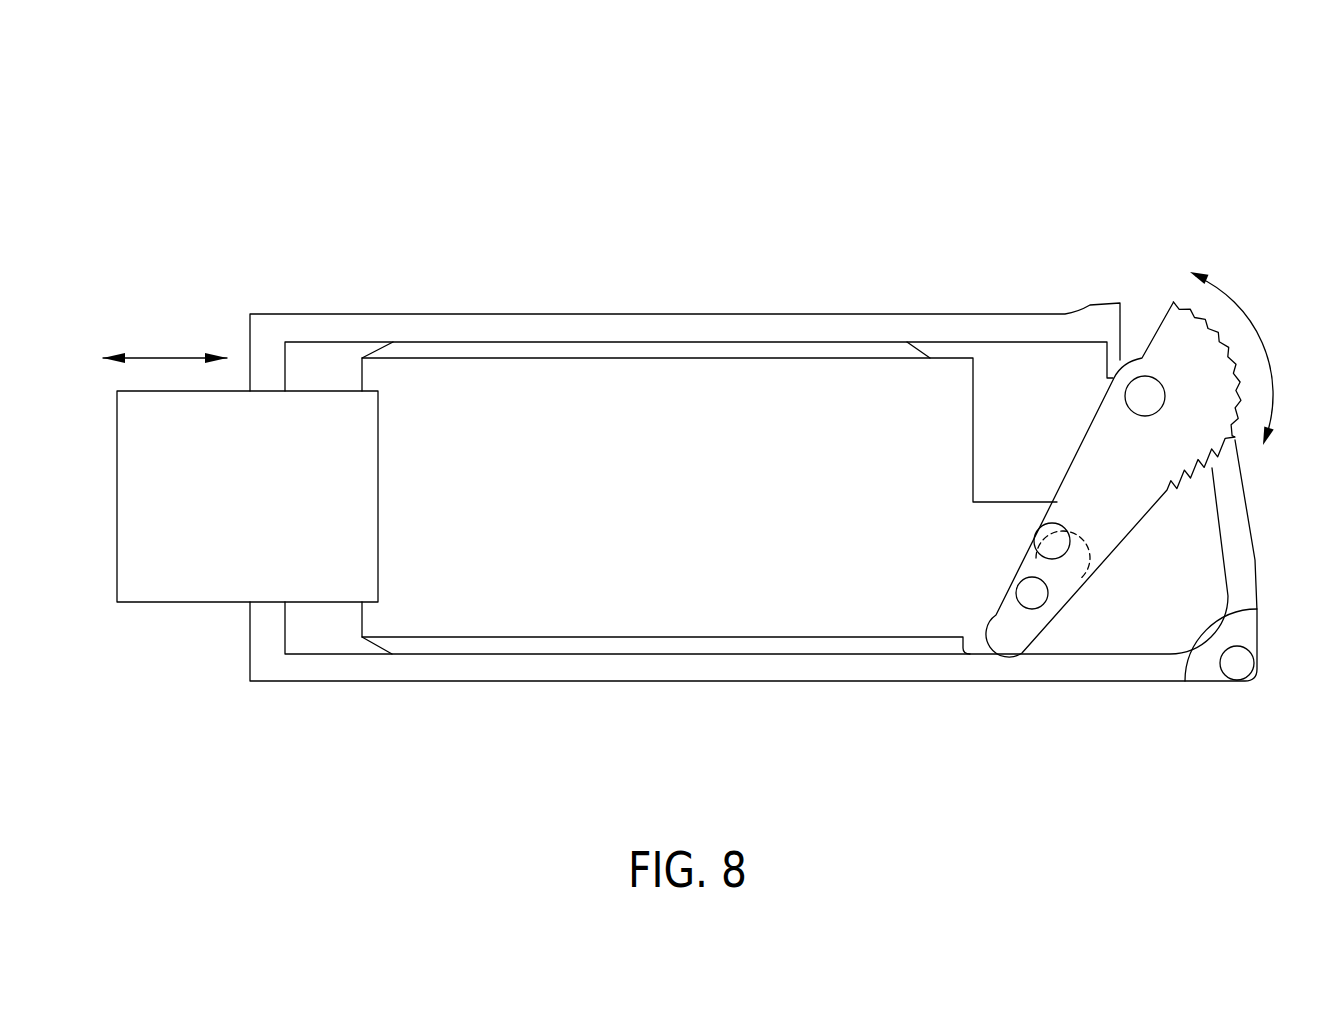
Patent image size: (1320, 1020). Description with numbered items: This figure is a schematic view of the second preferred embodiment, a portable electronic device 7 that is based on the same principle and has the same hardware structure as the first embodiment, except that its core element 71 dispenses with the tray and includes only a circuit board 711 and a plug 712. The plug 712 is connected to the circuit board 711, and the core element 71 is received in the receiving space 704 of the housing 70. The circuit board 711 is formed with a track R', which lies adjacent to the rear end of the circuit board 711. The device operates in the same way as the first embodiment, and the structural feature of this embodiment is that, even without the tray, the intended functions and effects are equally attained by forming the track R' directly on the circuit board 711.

The portable electronic device 7 is at (1074, 150).
The housing 70 is at (433, 665).
The receiving space 704 is at (318, 627).
The core element 71 is at (538, 233).
The circuit board 711 is at (492, 417).
The plug 712 is at (315, 417).
The track R' is at (1113, 526).